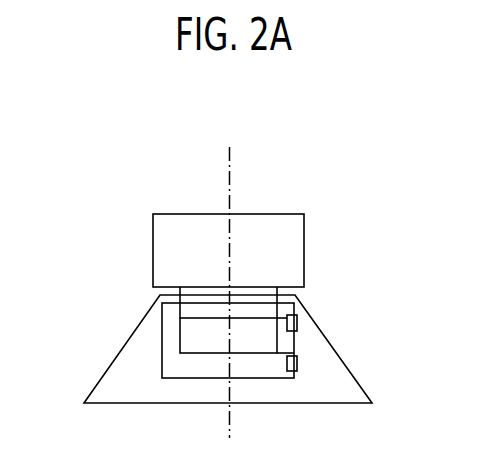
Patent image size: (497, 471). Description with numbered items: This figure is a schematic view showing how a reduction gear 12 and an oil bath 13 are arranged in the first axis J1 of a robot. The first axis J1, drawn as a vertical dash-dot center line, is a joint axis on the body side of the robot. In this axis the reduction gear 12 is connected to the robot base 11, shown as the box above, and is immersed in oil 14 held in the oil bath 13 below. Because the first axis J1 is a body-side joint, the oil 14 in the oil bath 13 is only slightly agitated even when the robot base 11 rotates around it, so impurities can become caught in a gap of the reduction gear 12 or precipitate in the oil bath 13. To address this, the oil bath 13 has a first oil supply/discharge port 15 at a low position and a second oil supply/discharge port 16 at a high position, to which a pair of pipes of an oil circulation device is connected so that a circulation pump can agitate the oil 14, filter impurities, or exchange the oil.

The first axis J1 is at (231, 152).
The robot base 11 is at (273, 214).
The reduction gear 12 is at (296, 346).
The oil bath 13 is at (160, 352).
The oil 14 is at (205, 318).
The first oil supply/discharge port 15 is at (300, 362).
The second oil supply/discharge port 16 is at (299, 320).